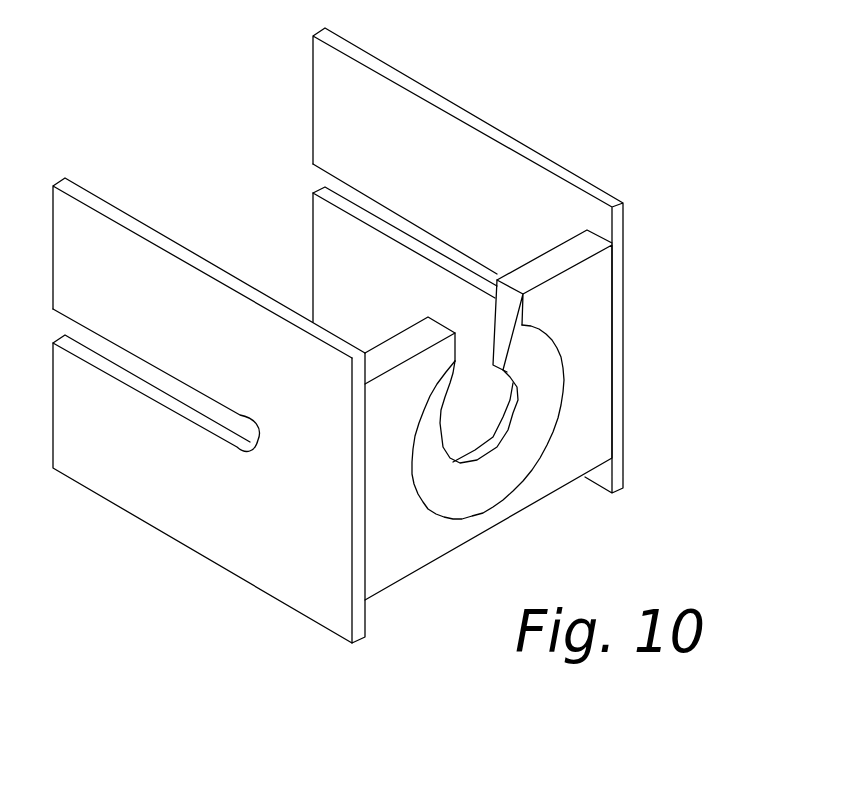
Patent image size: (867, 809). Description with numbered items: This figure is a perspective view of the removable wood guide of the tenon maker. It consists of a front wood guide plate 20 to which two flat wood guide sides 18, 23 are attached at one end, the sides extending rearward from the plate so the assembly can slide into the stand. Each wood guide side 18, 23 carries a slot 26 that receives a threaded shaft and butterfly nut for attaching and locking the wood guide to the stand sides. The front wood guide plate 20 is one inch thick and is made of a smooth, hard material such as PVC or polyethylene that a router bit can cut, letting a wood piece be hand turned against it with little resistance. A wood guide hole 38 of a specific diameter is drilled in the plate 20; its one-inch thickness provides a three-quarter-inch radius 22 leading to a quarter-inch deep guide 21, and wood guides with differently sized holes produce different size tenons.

The wood guide side 18 is at (567, 167).
The front wood guide plate 20 is at (413, 543).
The guide 21 is at (472, 462).
The radius 22 is at (520, 455).
The wood guide side 23 is at (358, 610).
The slot 26 is at (362, 200).
The wood guide hole 38 is at (493, 410).